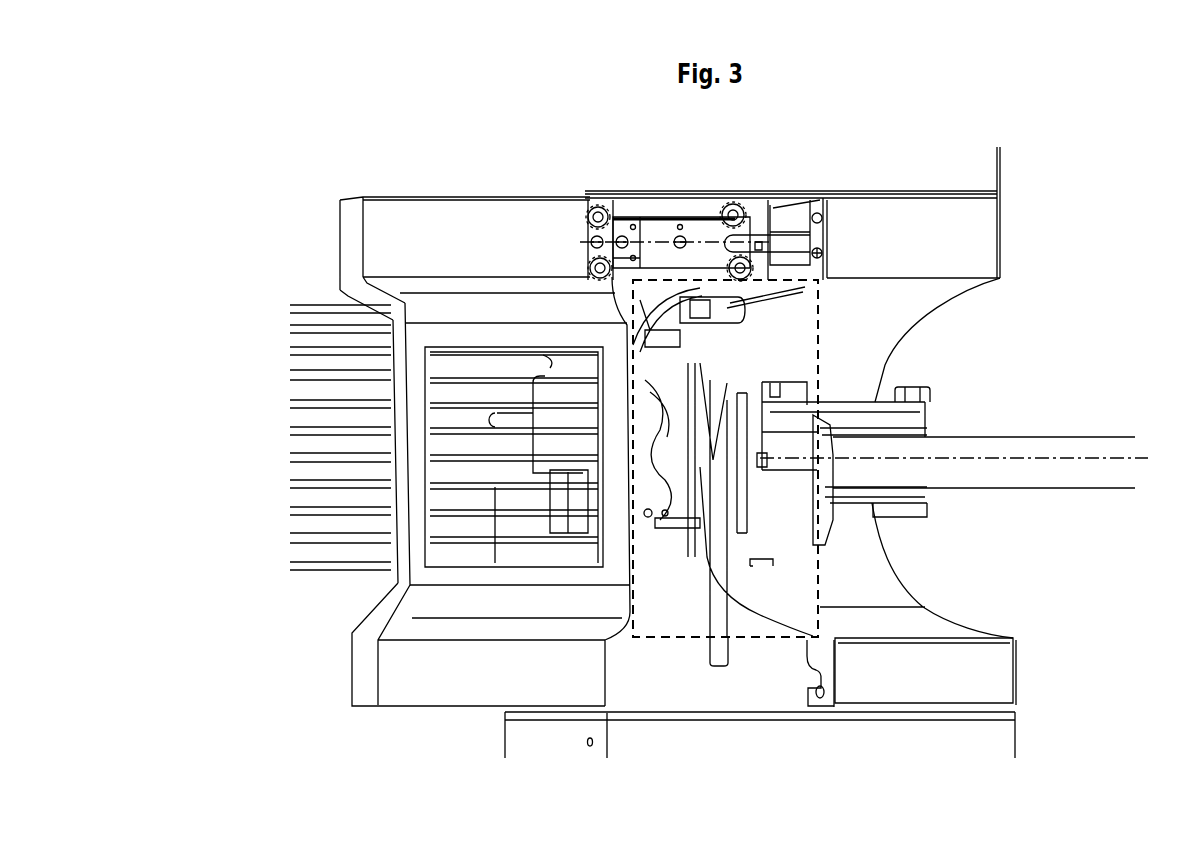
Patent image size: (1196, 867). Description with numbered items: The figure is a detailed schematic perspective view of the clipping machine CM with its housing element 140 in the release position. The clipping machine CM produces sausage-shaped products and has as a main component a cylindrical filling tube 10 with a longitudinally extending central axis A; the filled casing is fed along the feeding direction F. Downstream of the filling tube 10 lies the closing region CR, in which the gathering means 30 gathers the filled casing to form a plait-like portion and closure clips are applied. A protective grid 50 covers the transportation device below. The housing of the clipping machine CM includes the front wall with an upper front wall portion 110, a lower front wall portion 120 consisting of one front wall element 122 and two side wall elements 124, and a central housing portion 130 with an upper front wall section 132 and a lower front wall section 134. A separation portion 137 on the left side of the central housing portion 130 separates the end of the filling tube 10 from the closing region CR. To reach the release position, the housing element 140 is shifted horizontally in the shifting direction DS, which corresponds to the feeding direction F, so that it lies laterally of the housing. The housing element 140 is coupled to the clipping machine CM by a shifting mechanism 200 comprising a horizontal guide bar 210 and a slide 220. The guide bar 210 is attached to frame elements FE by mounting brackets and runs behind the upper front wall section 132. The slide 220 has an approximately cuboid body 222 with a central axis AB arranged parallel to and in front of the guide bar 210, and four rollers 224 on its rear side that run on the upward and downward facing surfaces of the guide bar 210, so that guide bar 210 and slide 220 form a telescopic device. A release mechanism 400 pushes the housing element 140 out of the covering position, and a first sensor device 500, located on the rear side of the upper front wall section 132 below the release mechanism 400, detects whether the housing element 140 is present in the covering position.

The filling tube 10 is at (1102, 450).
The gathering means 30 is at (713, 387).
The protective grid 50 is at (307, 568).
The upper front wall portion 110 is at (970, 172).
The lower front wall portion 120 is at (695, 740).
The front wall element 122 is at (815, 742).
The side wall element 124 is at (527, 743).
The central housing portion 130 is at (915, 620).
The upper front wall section 132 is at (977, 262).
The lower front wall section 134 is at (987, 672).
The separation portion 137 is at (792, 565).
The housing element 140 is at (385, 235).
The shifting mechanism 200 is at (821, 178).
The guide bar 210 is at (777, 243).
The slide 220 is at (697, 233).
The body 222 is at (660, 237).
The rollers 224 is at (603, 267).
The release mechanism 400 is at (827, 218).
The first sensor device 500 is at (827, 253).
The shifting direction DS is at (475, 188).
The central axis of the body AB is at (748, 240).
The frame elements FE is at (682, 207).
The clipping machine CM is at (1160, 94).
The closing region CR is at (668, 638).
The feeding direction F is at (1107, 503).
The central axis A is at (1137, 462).